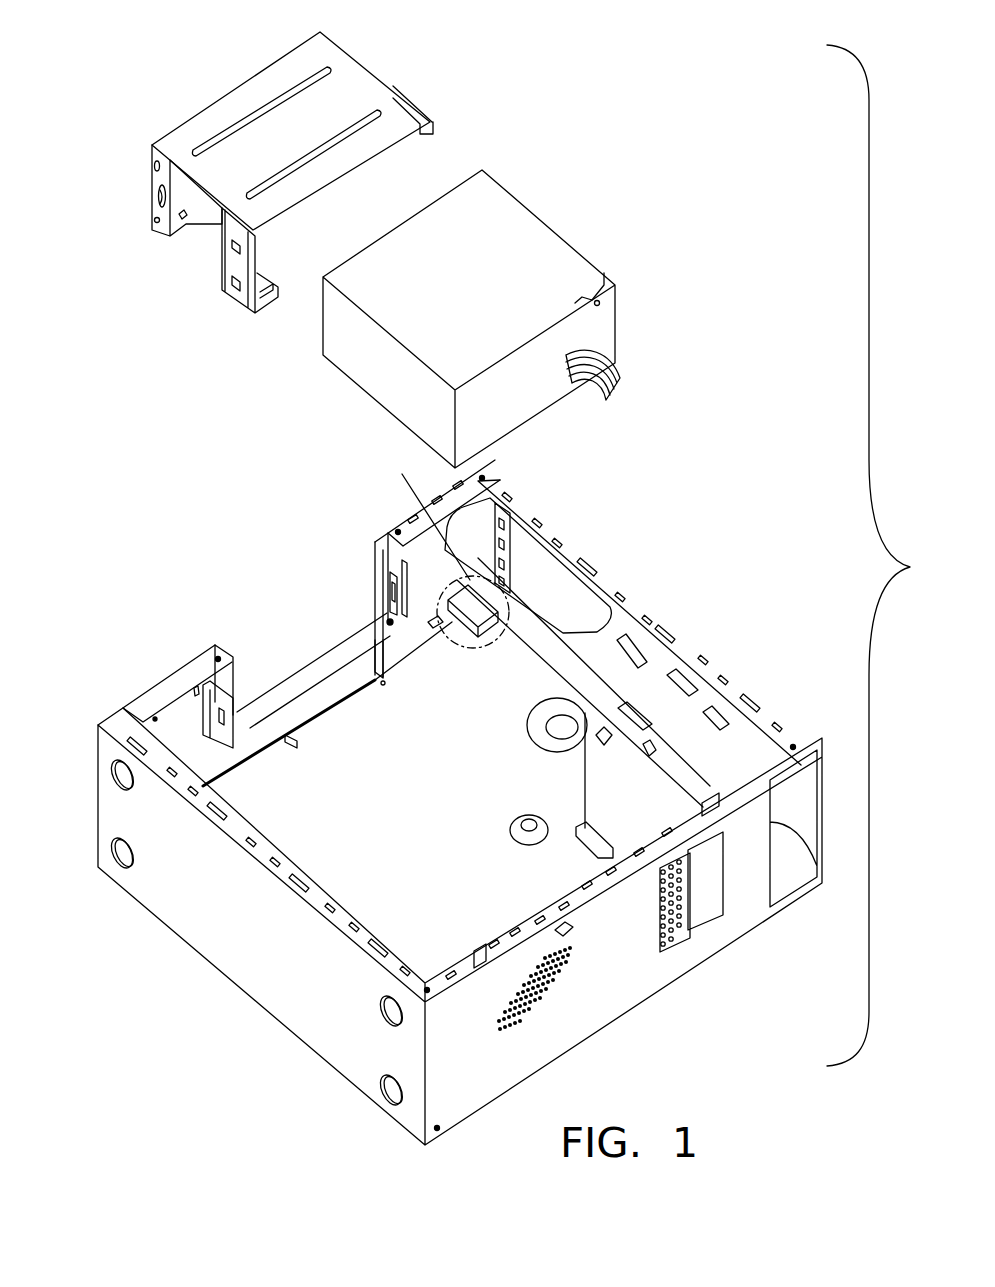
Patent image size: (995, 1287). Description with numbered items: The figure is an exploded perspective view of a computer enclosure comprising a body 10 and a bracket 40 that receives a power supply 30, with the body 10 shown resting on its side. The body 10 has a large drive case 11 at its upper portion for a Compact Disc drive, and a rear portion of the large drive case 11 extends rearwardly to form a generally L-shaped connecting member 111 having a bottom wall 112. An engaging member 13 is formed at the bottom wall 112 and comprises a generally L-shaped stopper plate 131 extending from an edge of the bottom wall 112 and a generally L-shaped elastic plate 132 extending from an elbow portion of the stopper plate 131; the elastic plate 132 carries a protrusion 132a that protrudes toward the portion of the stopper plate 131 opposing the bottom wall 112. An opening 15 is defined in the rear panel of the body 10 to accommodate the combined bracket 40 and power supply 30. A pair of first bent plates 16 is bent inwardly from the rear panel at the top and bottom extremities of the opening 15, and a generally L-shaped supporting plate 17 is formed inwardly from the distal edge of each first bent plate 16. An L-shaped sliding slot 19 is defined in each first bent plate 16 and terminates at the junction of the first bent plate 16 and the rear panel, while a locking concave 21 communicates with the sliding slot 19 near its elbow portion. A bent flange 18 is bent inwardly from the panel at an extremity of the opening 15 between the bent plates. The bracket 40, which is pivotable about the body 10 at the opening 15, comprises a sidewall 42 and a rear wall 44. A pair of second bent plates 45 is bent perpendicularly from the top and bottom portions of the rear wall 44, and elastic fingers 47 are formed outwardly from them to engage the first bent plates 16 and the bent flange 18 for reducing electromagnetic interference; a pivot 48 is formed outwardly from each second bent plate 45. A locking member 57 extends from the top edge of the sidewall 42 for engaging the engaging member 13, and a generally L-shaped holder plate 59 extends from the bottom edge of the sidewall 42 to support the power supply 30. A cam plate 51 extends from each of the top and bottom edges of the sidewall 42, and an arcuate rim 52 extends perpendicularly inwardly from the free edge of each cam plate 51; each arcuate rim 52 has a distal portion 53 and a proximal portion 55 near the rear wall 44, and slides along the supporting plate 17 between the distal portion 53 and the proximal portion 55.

The body 10 is at (439, 786).
The large drive case 11 is at (639, 622).
The connecting member 111 is at (612, 598).
The bottom wall 112 is at (537, 665).
The engaging member 13 is at (554, 530).
The stopper plate 131 is at (485, 500).
The elastic plate 132 is at (609, 531).
The protrusion 132a is at (515, 575).
The opening 15 is at (325, 626).
The first bent plates 16 is at (218, 680).
The supporting plate 17 is at (238, 688).
The bent flange 18 is at (300, 684).
The sliding slot 19 is at (222, 745).
The locking concave 21 is at (210, 752).
The power supply 30 is at (563, 217).
The bracket 40 is at (293, 183).
The sidewall 42 is at (296, 68).
The rear wall 44 is at (195, 111).
The second bent plates 45 is at (159, 186).
The elastic fingers 47 is at (154, 166).
The pivot 48 is at (182, 216).
The cam plate 51 is at (156, 214).
The arcuate rim 52 is at (230, 240).
The distal portion 53 is at (232, 262).
The proximal portion 55 is at (160, 192).
The locking member 57 is at (431, 122).
The holder plate 59 is at (176, 275).